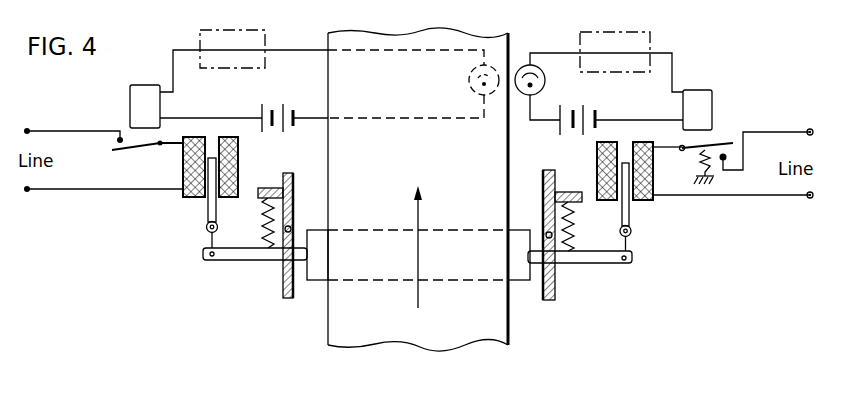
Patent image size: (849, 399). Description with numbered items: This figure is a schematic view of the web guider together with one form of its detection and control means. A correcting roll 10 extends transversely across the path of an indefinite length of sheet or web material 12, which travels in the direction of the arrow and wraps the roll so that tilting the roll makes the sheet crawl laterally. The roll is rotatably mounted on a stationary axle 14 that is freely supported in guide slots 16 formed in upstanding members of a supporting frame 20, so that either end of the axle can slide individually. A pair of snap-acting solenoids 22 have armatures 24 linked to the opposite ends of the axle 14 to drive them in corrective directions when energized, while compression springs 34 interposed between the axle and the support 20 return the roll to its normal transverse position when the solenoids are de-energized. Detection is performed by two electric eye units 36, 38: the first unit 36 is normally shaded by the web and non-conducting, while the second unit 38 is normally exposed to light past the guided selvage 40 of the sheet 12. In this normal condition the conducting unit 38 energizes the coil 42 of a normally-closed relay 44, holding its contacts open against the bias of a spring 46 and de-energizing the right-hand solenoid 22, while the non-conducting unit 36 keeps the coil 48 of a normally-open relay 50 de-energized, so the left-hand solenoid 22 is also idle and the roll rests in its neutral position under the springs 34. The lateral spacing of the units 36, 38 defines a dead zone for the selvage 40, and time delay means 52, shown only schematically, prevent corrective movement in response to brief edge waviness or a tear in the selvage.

The correcting roll 10 is at (522, 282).
The web material 12 is at (375, 329).
The stationary axle 14 is at (236, 262).
The guide slots 16 is at (289, 233).
The supporting frame 20 is at (557, 290).
The snap-acting solenoid 22 is at (239, 157).
The armature 24 is at (208, 207).
The compression spring 34 is at (262, 216).
The electric eye unit 36 is at (469, 82).
The electric eye unit 38 is at (546, 80).
The guided selvage 40 is at (510, 151).
The relay coil 42 is at (712, 99).
The normally-closed relay 44 is at (722, 143).
The spring 46 is at (698, 156).
The relay coil 48 is at (130, 95).
The normally-open relay 50 is at (122, 150).
The time delay means 52 is at (628, 30).